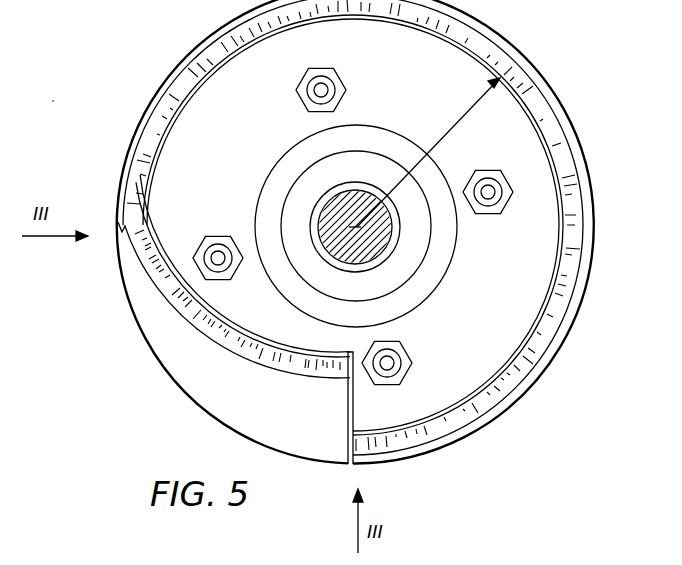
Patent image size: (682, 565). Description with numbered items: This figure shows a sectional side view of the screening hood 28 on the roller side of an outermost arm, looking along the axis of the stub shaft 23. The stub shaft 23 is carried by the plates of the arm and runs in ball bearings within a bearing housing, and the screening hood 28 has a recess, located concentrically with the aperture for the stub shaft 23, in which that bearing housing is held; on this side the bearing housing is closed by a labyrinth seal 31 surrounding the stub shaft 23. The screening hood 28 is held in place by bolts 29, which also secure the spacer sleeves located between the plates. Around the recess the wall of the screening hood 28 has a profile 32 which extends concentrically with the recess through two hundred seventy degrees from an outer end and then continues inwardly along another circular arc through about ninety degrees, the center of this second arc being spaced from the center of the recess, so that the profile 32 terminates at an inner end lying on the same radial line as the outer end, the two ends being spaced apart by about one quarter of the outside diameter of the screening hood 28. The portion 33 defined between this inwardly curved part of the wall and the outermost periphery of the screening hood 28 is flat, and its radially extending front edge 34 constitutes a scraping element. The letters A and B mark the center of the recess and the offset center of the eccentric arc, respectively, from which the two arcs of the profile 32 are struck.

The stub shaft 23 is at (350, 194).
The screening hood 28 is at (189, 50).
The bolts 29 is at (318, 90).
The labyrinth seal 31 is at (383, 170).
The profile 32 is at (557, 117).
The portion 33 is at (195, 384).
The front edge 34 is at (348, 400).
The shaft axis A is at (357, 228).
The radius of cam B is at (228, 320).